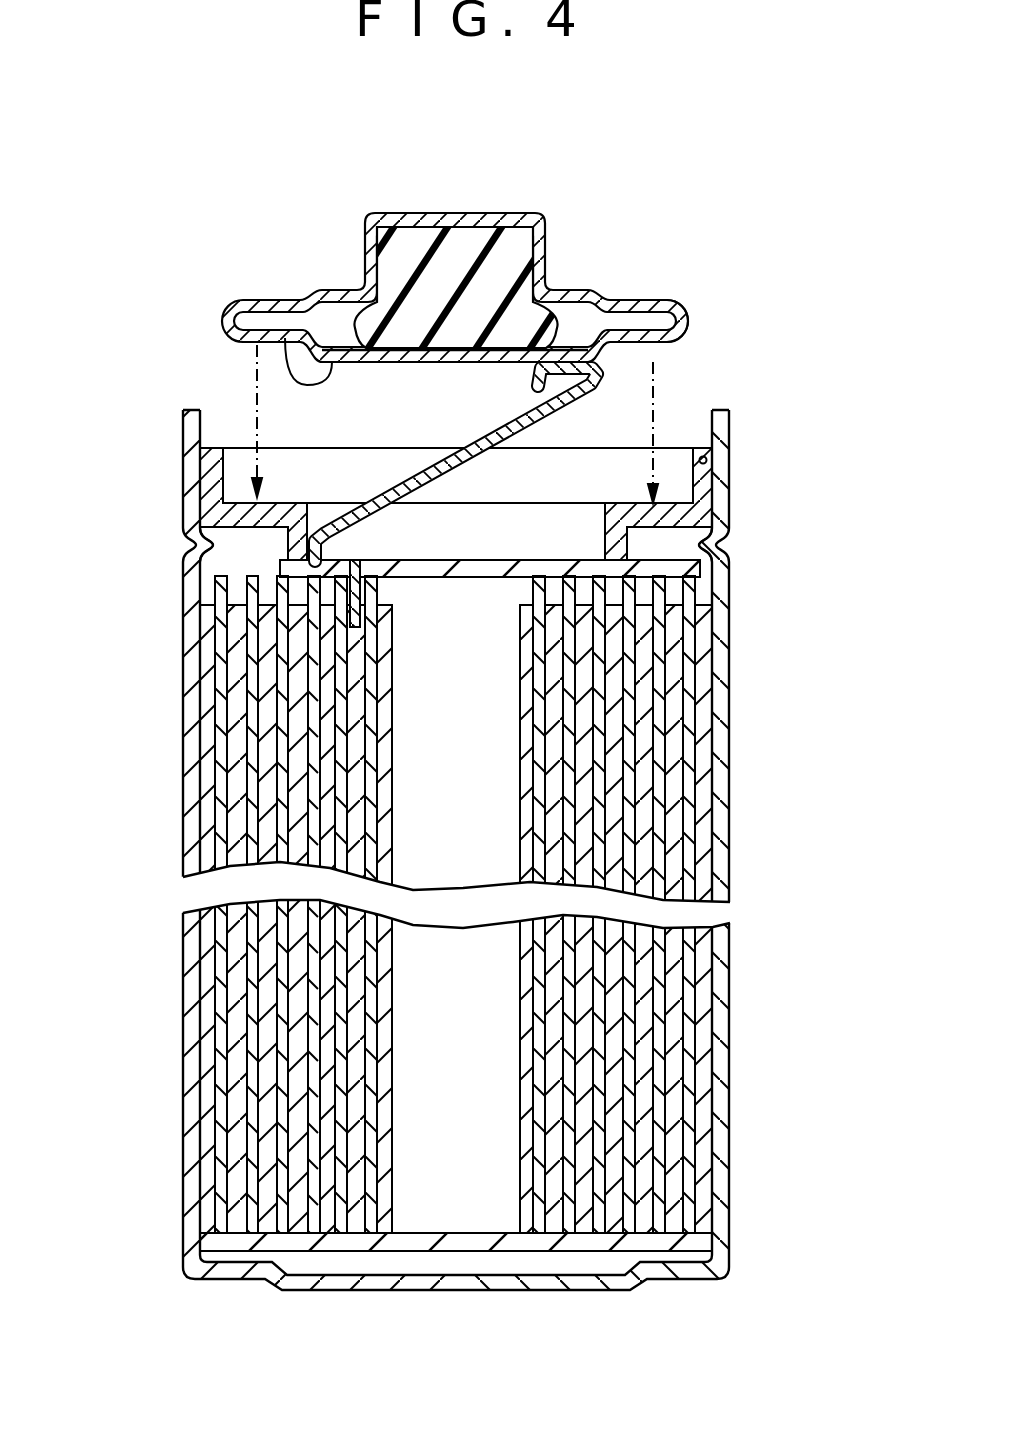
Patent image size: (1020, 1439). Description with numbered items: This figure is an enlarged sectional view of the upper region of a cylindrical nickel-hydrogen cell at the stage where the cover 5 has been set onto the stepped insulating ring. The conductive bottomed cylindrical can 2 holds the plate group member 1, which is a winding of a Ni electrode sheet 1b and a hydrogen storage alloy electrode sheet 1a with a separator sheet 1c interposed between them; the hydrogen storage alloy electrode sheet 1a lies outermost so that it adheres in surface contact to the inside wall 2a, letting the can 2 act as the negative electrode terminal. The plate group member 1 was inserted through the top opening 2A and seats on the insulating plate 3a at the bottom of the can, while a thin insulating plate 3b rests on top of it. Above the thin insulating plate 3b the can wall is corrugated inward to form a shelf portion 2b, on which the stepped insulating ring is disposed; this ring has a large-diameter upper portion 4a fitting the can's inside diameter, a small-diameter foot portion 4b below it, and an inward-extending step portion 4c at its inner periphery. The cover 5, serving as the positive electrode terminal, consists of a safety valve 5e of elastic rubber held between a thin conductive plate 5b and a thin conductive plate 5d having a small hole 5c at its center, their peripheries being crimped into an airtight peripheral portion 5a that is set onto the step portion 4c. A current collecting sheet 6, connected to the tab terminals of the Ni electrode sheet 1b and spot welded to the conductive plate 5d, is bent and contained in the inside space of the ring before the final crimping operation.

The plate group member 1 is at (538, 904).
The hydrogen storage alloy electrode sheet 1a is at (703, 653).
The Ni electrode sheet 1b is at (673, 715).
The separator sheet 1c is at (833, 643).
The bottomed cylindrical can 2 is at (722, 975).
The inside wall 2a is at (713, 460).
The shelf portion 2b is at (200, 515).
The top opening 2A is at (690, 384).
The insulating plate 3a is at (680, 1243).
The thin insulating plate 3b is at (660, 568).
The large-diameter upper portion 4a is at (705, 478).
The small-diameter foot portion 4b is at (280, 527).
The step portion 4c is at (700, 537).
The cover 5 is at (414, 243).
The peripheral portion 5a is at (645, 300).
The thin conductive plate 5b is at (462, 216).
The small hole 5c is at (447, 352).
The thin conductive plate 5d is at (285, 338).
The safety valve 5e is at (490, 240).
The current collecting sheet 6 is at (513, 432).